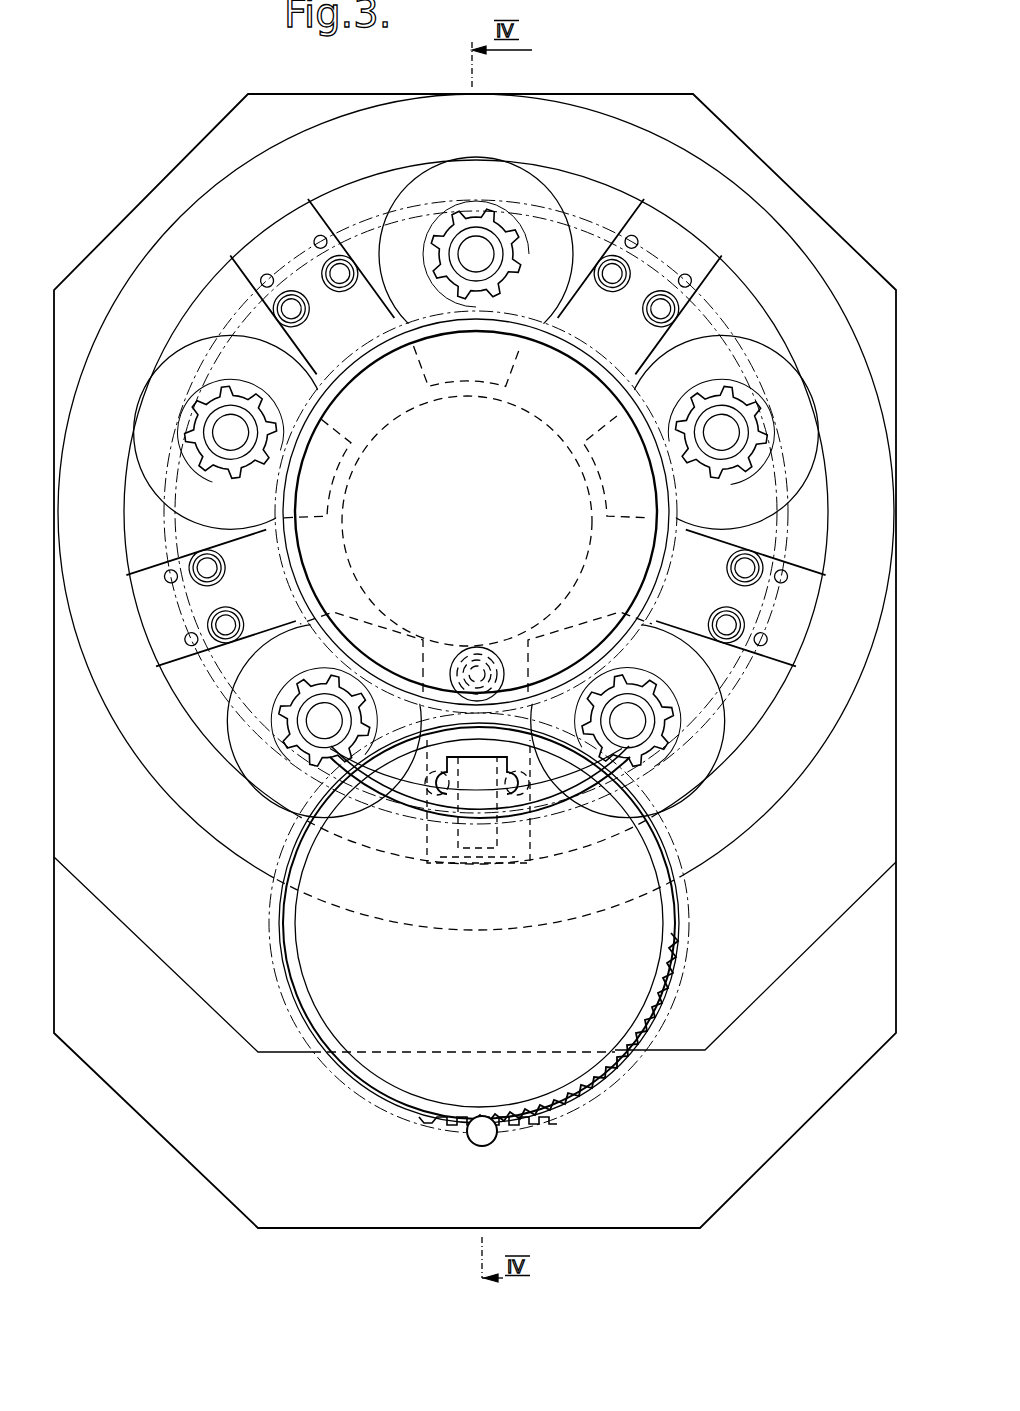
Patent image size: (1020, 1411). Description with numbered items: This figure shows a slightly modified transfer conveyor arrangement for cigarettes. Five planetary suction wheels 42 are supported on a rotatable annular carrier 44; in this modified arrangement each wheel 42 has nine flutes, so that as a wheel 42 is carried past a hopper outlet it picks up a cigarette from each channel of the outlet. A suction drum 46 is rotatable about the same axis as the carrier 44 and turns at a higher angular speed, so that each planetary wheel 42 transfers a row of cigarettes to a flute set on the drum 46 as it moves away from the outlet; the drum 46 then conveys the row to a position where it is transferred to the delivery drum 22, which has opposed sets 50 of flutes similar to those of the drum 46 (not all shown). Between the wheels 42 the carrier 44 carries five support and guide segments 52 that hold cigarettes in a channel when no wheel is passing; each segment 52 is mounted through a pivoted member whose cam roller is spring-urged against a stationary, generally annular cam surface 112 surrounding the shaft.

The delivery drum 22 is at (537, 1073).
The planetary suction wheel 42 is at (505, 238).
The rotatable annular carrier 44 is at (690, 322).
The suction drum 46 is at (638, 560).
The sets of flutes 50 is at (628, 1055).
The support and guide segment 52 is at (522, 802).
The annular cam surface 112 is at (452, 648).